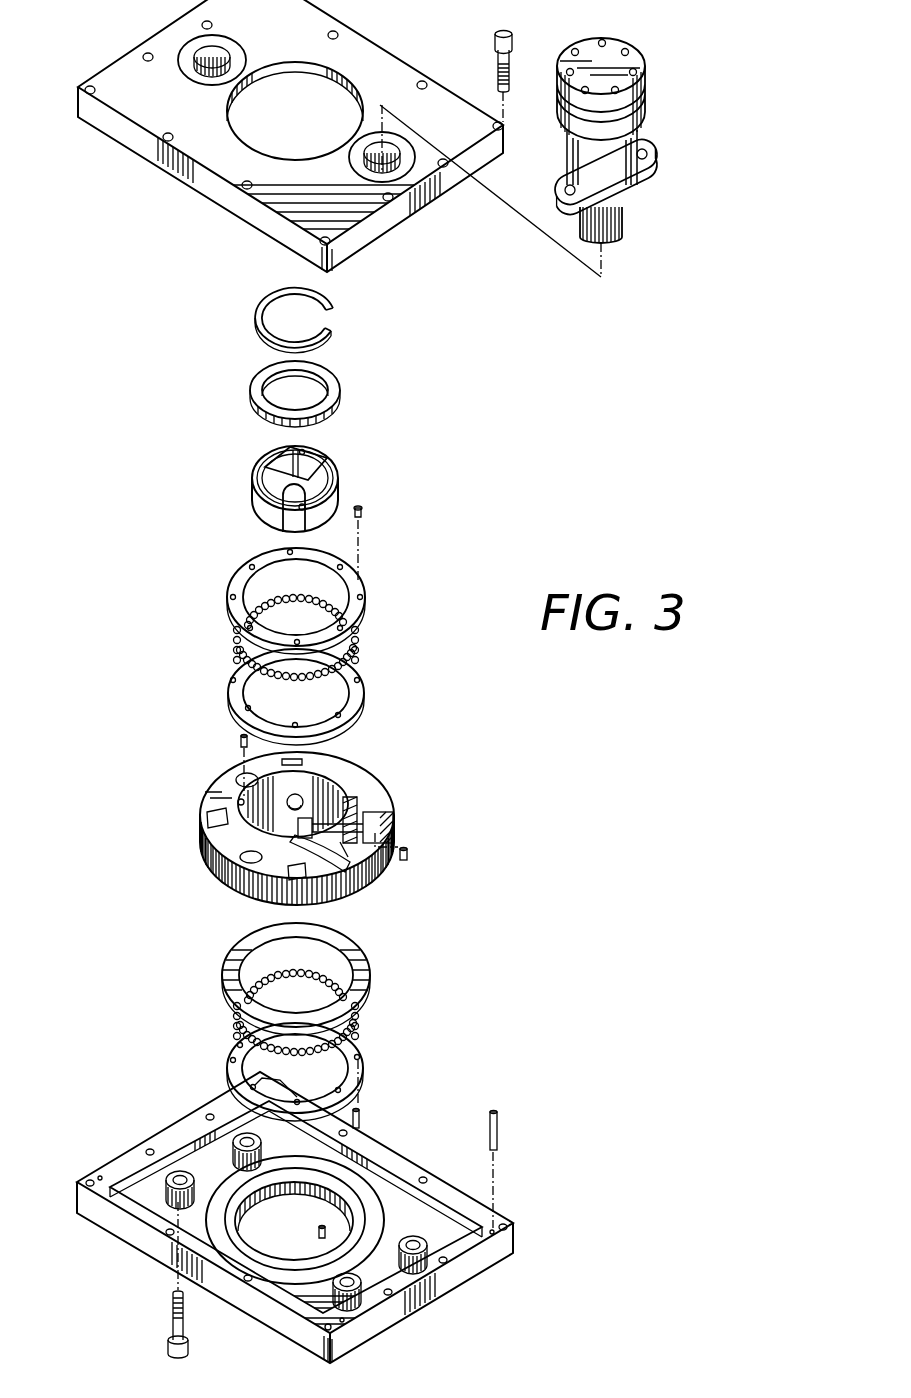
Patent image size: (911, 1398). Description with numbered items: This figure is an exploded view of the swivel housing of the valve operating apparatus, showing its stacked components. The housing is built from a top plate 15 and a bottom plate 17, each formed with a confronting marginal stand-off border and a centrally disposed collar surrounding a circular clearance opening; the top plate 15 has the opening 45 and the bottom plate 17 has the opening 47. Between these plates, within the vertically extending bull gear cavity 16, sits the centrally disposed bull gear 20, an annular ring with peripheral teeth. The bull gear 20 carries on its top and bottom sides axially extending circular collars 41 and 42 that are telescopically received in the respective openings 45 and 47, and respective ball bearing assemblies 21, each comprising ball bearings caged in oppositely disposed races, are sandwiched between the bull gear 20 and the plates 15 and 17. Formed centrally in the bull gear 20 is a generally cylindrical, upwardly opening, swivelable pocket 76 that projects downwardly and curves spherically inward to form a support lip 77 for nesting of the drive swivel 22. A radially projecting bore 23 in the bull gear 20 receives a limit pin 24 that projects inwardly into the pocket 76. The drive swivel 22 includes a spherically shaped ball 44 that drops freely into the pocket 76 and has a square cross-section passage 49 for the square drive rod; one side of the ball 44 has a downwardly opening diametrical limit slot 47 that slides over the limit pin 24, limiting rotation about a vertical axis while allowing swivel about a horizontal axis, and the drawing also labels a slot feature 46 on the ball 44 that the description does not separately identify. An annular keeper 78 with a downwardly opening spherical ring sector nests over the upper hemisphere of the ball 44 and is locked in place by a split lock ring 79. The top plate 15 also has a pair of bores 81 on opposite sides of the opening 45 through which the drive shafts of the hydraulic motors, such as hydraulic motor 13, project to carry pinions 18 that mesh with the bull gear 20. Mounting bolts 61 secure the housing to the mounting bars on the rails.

The hydraulic motor 13 is at (632, 143).
The top plate 15 is at (78, 117).
The bull gear cavity 16 is at (410, 1210).
The bottom plate 17 is at (447, 1297).
The pinion 18 is at (622, 217).
The bull gear 20 is at (339, 822).
The ball bearing assembly 21 is at (370, 640).
The drive swivel 22 is at (308, 500).
The radially projecting bore 23 is at (356, 845).
The limit pin 24 is at (309, 820).
The collar 41 is at (340, 87).
The collar 42 is at (345, 790).
The spherically shaped ball 44 is at (257, 499).
The circular clearance opening 45 is at (278, 67).
The slot 46 is at (280, 533).
The limit slot 47 is at (305, 506).
The square passage 49 is at (304, 453).
The mounting bolt 61 is at (186, 1328).
The swivelable pocket 76 is at (305, 780).
The support lip 77 is at (353, 876).
The annular keeper 78 is at (338, 385).
The split lock ring 79 is at (333, 312).
The bore 81 is at (214, 52).